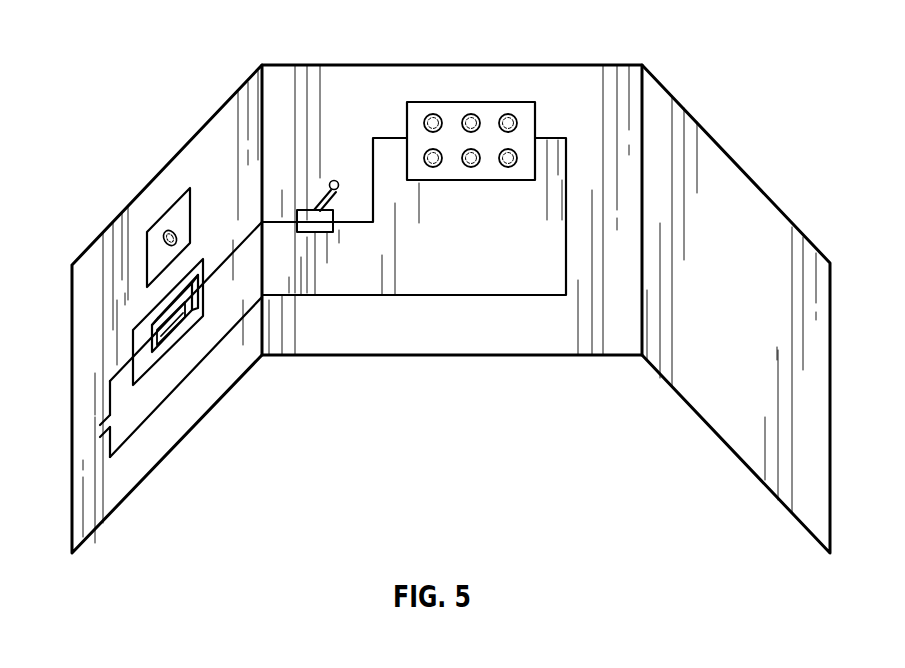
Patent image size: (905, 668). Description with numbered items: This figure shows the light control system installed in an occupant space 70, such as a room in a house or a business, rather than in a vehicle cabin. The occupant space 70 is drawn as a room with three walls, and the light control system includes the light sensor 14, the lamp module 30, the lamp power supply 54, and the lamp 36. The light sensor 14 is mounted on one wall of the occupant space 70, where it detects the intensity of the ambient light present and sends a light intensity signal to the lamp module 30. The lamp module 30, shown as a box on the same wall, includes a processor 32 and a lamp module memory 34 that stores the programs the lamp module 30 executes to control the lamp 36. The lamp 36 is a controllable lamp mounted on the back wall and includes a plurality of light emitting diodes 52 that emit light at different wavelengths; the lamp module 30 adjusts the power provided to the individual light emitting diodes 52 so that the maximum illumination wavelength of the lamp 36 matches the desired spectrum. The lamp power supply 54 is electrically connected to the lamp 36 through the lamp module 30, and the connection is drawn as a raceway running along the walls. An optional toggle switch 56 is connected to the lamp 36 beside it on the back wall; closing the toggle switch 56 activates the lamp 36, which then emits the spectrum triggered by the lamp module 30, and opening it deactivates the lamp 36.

The light sensor 14 is at (168, 208).
The lamp module 30 is at (152, 361).
The processor 32 is at (200, 303).
The lamp module memory 34 is at (165, 330).
The lamp 36 is at (428, 102).
The light emitting diodes 52 is at (510, 120).
The lamp power supply 54 is at (100, 422).
The toggle switch 56 is at (336, 180).
The occupant space 70 is at (441, 448).